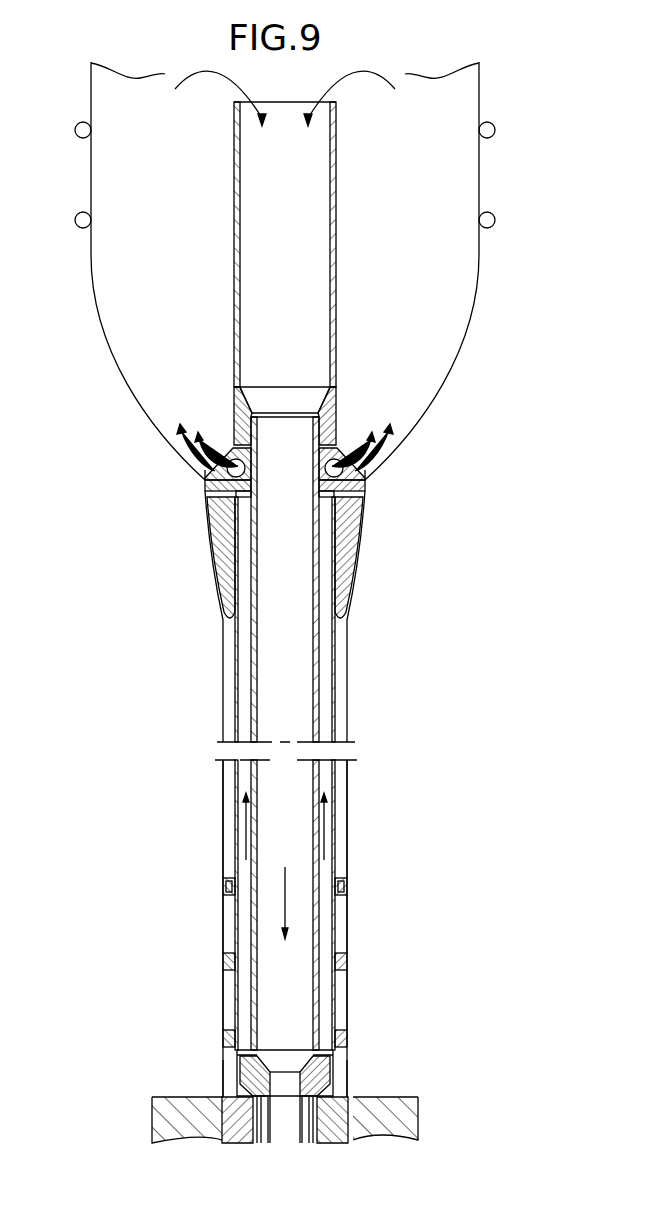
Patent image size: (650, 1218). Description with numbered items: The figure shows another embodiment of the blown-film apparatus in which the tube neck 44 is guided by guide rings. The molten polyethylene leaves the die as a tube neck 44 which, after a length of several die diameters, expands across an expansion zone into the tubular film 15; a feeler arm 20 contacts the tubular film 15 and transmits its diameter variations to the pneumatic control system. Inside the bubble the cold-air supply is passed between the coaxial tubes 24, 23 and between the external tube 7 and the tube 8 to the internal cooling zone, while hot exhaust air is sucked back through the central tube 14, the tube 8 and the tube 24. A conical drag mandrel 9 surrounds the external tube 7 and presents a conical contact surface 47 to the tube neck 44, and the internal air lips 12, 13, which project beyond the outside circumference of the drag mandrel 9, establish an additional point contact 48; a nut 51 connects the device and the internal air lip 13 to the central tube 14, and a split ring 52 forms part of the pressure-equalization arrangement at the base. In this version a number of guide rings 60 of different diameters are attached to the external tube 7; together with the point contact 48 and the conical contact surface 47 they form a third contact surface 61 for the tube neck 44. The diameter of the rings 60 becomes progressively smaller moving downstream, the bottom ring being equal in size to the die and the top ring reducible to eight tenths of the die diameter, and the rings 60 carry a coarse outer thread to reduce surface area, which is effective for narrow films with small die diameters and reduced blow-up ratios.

The tubular film 15 is at (91, 100).
The feeler arm 20 is at (495, 219).
The central tube 14 is at (337, 282).
The nut 51 is at (243, 415).
The internal air lip 13 is at (228, 450).
The internal air lip 12 is at (213, 491).
The point contact 48 is at (357, 475).
The conical contact surface 47 is at (346, 540).
The conical drag mandrel 9 is at (340, 585).
The external tube 7 is at (236, 655).
The tube 8 is at (251, 705).
The tube neck 44 is at (222, 853).
The guide rings 60 is at (343, 881).
The third contact surface 61 is at (346, 889).
The tube 23 is at (262, 1143).
The tube 24 is at (271, 1144).
The split ring 52 is at (327, 1126).